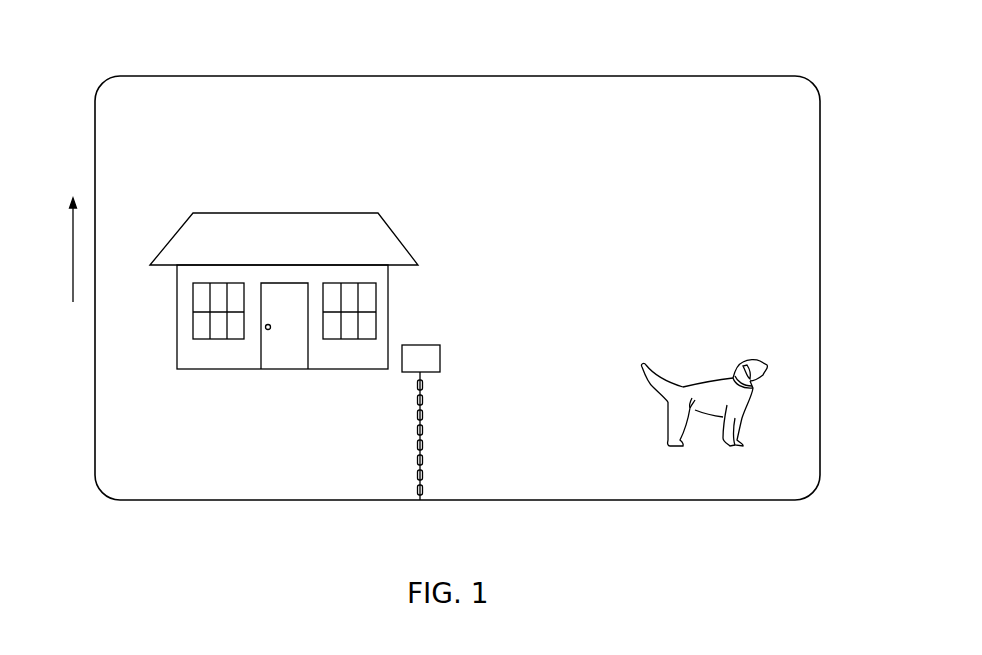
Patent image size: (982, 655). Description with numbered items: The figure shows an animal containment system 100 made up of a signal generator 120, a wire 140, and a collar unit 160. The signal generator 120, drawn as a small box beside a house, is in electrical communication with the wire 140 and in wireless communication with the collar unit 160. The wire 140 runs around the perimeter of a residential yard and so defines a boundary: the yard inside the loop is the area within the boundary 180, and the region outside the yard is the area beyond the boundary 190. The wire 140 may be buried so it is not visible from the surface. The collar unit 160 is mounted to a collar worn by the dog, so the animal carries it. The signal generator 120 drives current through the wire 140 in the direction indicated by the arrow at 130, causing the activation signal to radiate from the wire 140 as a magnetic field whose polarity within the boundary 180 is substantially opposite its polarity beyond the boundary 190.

The animal containment system 100 is at (845, 76).
The signal generator 120 is at (420, 345).
The arrow indicating direction of current 130 is at (73, 262).
The wire 140 is at (820, 162).
The collar unit 160 is at (753, 388).
The area within the boundary 180 is at (520, 112).
The area beyond the boundary 190 is at (520, 45).